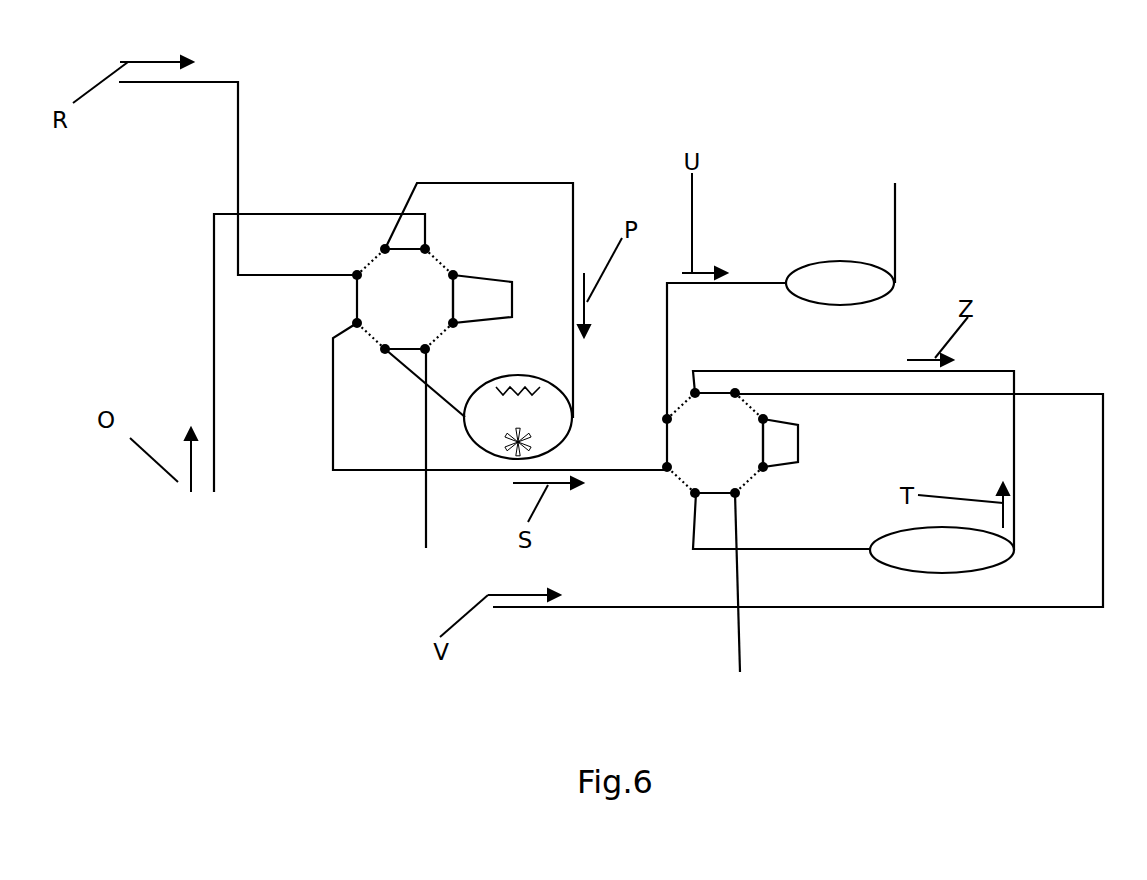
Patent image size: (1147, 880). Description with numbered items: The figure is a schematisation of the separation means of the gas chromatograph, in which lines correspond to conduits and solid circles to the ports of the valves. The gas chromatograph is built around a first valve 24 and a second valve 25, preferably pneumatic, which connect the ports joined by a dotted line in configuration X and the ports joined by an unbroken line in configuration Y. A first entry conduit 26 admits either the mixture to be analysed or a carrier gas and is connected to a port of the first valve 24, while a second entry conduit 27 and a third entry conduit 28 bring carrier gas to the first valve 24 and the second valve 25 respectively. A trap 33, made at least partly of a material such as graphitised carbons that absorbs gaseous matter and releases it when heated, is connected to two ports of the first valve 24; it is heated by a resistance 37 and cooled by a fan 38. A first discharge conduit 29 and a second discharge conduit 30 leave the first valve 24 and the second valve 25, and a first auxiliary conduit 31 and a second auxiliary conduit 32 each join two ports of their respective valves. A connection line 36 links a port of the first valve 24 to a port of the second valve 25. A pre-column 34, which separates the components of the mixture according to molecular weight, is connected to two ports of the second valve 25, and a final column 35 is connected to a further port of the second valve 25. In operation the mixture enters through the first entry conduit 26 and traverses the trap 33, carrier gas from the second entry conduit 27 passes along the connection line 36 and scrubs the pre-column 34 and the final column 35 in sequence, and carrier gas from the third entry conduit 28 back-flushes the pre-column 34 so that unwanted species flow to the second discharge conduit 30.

The first valve 24 is at (405, 299).
The second valve 25 is at (715, 443).
The first entry conduit 26 is at (215, 462).
The second entry conduit 27 is at (203, 82).
The third entry conduit 28 is at (572, 617).
The first discharge conduit 29 is at (430, 517).
The second discharge conduit 30 is at (752, 638).
The first auxiliary conduit 31 is at (502, 278).
The second auxiliary conduit 32 is at (800, 447).
The trap 33 is at (478, 418).
The pre-column 34 is at (890, 533).
The final column 35 is at (840, 260).
The connection line 36 is at (382, 472).
The resistance 37 is at (517, 383).
The fan 38 is at (533, 437).